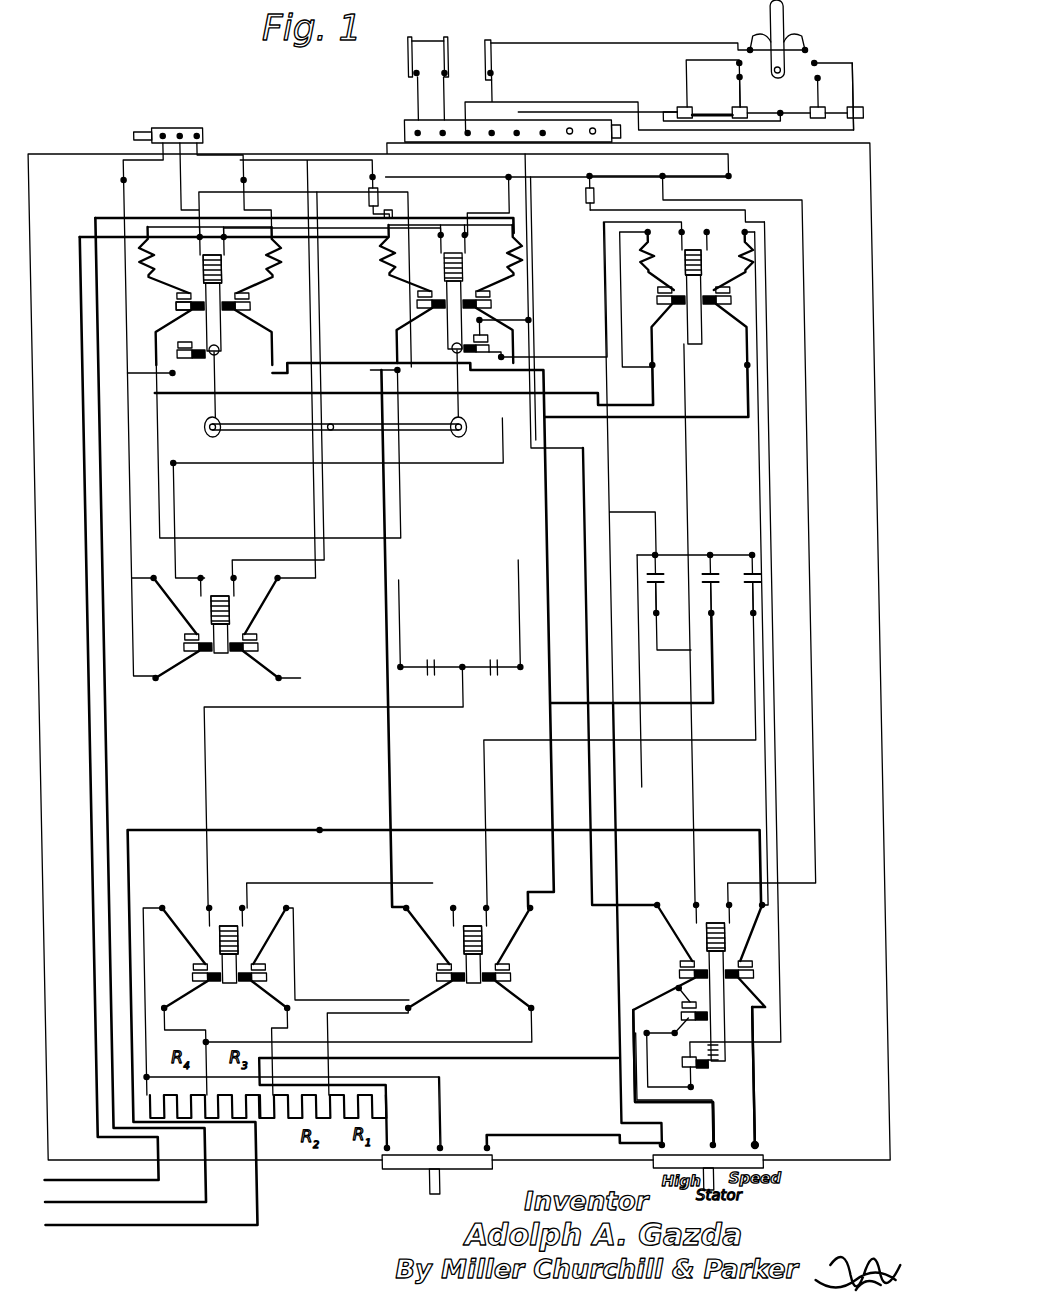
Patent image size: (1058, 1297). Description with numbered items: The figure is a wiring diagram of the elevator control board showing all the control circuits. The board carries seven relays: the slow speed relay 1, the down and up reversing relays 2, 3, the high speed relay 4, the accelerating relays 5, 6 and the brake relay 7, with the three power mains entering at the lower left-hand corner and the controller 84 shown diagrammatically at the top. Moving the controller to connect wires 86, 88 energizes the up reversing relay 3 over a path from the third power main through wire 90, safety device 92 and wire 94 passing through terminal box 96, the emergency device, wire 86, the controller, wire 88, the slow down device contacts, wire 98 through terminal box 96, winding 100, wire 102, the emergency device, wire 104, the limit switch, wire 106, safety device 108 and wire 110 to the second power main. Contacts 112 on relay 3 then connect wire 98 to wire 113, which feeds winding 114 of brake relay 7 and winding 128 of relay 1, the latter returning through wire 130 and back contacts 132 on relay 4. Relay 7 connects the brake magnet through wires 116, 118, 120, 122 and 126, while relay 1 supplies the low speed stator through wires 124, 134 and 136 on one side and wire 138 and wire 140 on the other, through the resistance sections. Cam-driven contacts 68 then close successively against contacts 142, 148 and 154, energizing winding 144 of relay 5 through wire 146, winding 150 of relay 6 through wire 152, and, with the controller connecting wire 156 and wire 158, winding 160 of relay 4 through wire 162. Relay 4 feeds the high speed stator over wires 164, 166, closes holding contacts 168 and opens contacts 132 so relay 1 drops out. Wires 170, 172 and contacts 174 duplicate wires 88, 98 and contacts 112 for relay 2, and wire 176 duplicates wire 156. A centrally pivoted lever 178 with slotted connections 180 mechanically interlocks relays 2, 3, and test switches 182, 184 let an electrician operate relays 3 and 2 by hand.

The slow speed relay 1 is at (685, 305).
The down reversing relay 2 is at (446, 299).
The up reversing relay 3 is at (286, 382).
The high speed relay 4 is at (710, 1000).
The accelerating relay 5 is at (369, 1000).
The accelerating relay 6 is at (291, 1026).
The brake relay 7 is at (226, 628).
The contacts 68 is at (718, 592).
The controller 84 is at (784, 28).
The wire 86 is at (640, 43).
The wire 88 is at (840, 62).
The wire 90 is at (677, 208).
The safety device 92 is at (592, 197).
The wire 94 is at (484, 472).
The terminal box 96 is at (402, 125).
The wire 98 is at (509, 319).
The winding 100 is at (220, 262).
The wire 102 is at (542, 432).
The wire 104 is at (430, 40).
The wire 106 is at (414, 100).
The safety device 108 is at (364, 192).
The wire 110 is at (401, 206).
The contacts 112 is at (223, 322).
The wire 113 is at (363, 722).
The winding 114 is at (220, 598).
The wire 116 is at (210, 155).
The wire 118 is at (402, 722).
The wire 120 is at (166, 409).
The wire 122 is at (130, 152).
The wire 124 is at (461, 597).
The wire 126 is at (240, 158).
The winding 128 is at (697, 262).
The wire 130 is at (711, 683).
The back contacts 132 is at (680, 1068).
The wire 134 is at (510, 664).
The wire 136 is at (370, 1125).
The wire 138 is at (515, 656).
The wire 140 is at (425, 1125).
The contacts 142 is at (782, 597).
The winding 144 is at (462, 928).
The wire 146 is at (471, 808).
The contacts 148 is at (729, 597).
The winding 150 is at (225, 928).
The wire 152 is at (195, 790).
The contacts 154 is at (676, 597).
The wire 156 is at (836, 93).
The wire 158 is at (690, 491).
The winding 160 is at (698, 920).
The wire 162 is at (398, 784).
The wire 164 is at (612, 1033).
The wire 166 is at (745, 1085).
The contacts 168 is at (660, 1000).
The wire 170 is at (736, 90).
The wire 172 is at (612, 395).
The contacts 174 is at (497, 338).
The wire 176 is at (758, 92).
The lever 178 is at (335, 399).
The slot 180 is at (455, 433).
The switch 182 is at (460, 627).
The switch 184 is at (508, 677).